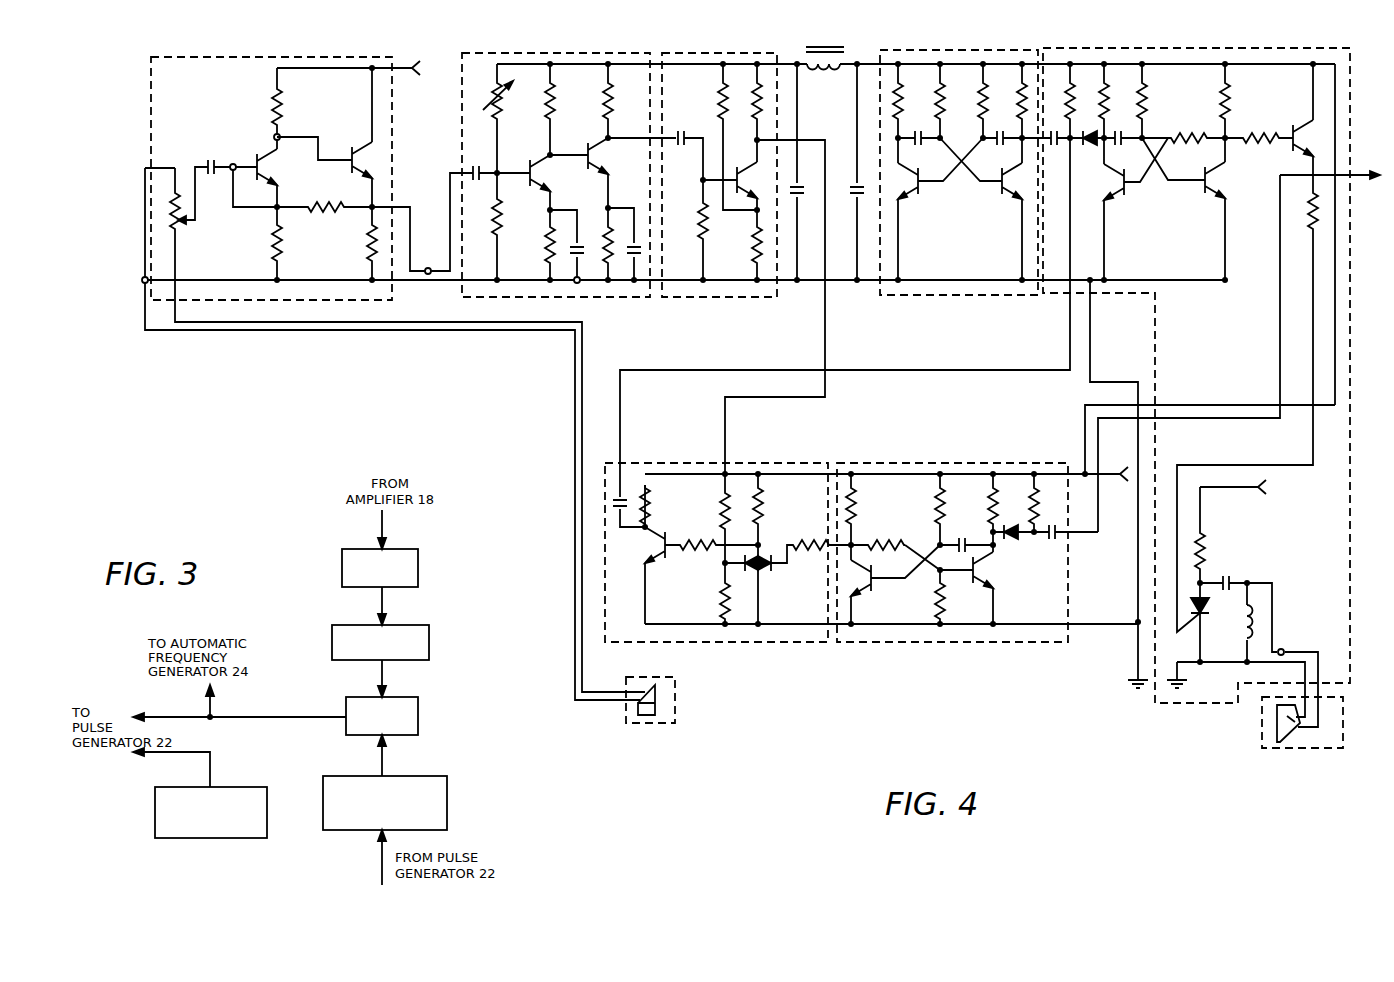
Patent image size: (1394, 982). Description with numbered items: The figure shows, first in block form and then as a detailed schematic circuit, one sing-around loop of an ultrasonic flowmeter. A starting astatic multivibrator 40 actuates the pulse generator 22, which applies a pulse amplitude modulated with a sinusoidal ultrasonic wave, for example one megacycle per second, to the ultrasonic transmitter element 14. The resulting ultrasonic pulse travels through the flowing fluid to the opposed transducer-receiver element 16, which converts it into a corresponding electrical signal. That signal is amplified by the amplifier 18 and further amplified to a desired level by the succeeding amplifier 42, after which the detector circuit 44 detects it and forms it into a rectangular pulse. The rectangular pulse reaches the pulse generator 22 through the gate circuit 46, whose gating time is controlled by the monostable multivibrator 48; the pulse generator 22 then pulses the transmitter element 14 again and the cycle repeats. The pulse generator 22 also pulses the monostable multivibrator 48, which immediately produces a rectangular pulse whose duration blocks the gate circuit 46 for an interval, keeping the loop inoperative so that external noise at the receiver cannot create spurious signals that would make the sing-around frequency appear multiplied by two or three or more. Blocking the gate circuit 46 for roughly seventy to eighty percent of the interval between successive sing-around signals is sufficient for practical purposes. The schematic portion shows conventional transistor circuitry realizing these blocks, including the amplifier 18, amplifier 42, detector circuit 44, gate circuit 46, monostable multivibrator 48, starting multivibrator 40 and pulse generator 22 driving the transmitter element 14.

In FIG. 4, the ultrasonic transmitter element 14 is at (1261, 721).
In FIG. 4, the transducer-receiver element 16 is at (677, 684).
In FIG. 4, the amplifier 18 is at (150, 128).
In FIG. 4, the pulse generator 22 is at (1153, 52).
In FIG. 4, the starting astatic multivibrator 40 is at (975, 300).
In FIG. 3, the starting astatic multivibrator 40 is at (248, 787).
In FIG. 4, the amplifier 42 is at (581, 300).
In FIG. 3, the amplifier 42 is at (405, 549).
In FIG. 4, the detector circuit 44 is at (684, 300).
In FIG. 3, the detector circuit 44 is at (415, 625).
In FIG. 4, the gate circuit 46 is at (723, 645).
In FIG. 3, the gate circuit 46 is at (418, 697).
In FIG. 4, the monostable multivibrator 48 is at (913, 645).
In FIG. 3, the monostable multivibrator 48 is at (425, 776).